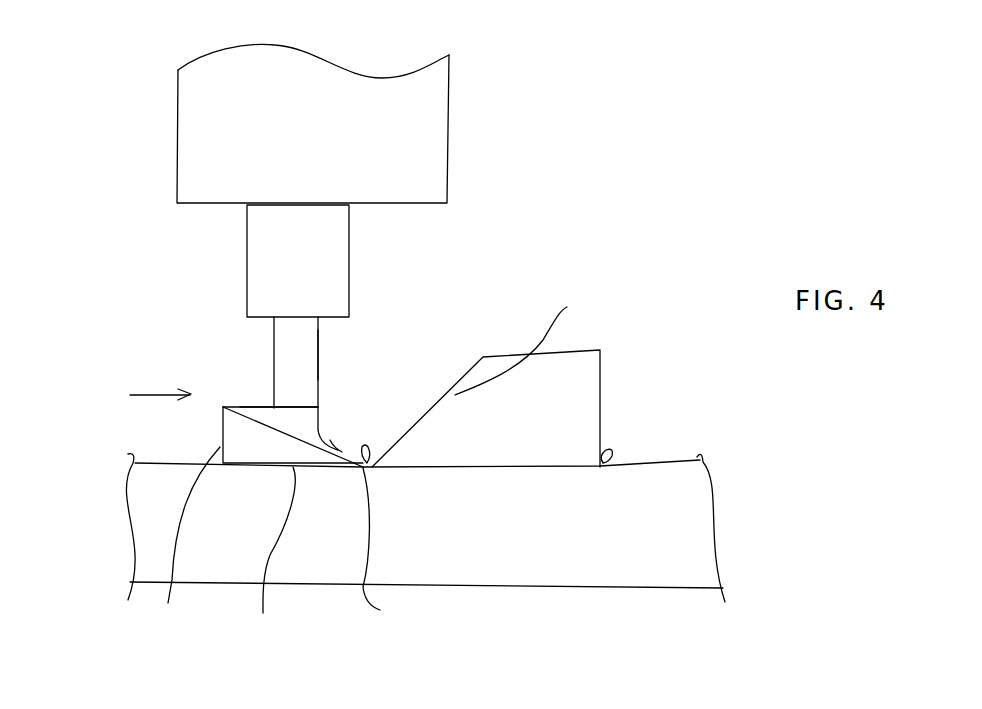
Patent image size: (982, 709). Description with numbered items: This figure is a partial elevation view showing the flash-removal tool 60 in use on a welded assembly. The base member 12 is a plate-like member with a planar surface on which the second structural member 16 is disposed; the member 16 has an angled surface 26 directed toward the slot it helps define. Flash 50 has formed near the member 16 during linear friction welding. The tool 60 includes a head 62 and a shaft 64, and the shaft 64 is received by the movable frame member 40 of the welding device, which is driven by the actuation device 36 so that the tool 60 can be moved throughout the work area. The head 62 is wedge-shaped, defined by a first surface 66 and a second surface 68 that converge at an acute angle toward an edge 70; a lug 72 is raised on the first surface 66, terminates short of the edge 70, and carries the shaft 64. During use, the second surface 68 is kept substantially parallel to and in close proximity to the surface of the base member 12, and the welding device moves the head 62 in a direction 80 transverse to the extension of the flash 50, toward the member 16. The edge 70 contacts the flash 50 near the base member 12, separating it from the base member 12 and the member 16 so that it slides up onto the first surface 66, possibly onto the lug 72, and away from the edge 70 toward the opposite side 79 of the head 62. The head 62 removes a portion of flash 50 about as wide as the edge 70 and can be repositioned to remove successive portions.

The base member 12 is at (678, 565).
The second structural member 16 is at (587, 377).
The angled surface 26 is at (536, 339).
The actuation device 36 is at (325, 153).
The frame member 40 is at (305, 273).
The flash 50 is at (363, 447).
The tool 60 is at (212, 345).
The head 62 is at (233, 432).
The shaft 64 is at (318, 342).
The first surface 66 is at (342, 452).
The second surface 68 is at (283, 555).
The edge 70 is at (393, 555).
The lug 72 is at (277, 417).
The opposite side 79 is at (183, 550).
The direction 80 is at (147, 393).